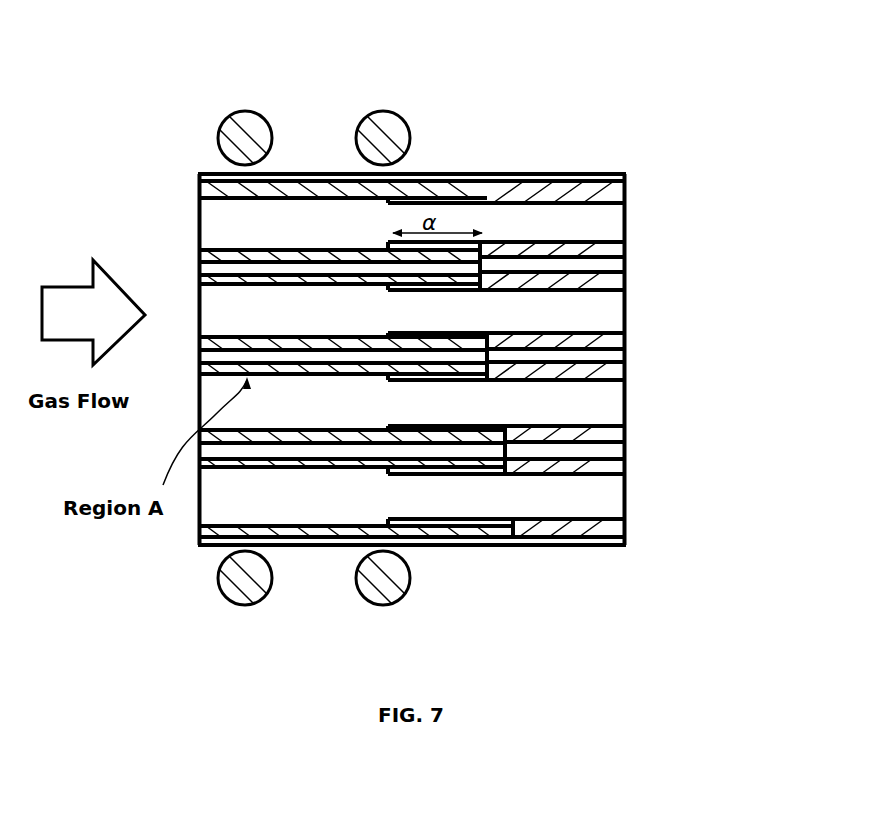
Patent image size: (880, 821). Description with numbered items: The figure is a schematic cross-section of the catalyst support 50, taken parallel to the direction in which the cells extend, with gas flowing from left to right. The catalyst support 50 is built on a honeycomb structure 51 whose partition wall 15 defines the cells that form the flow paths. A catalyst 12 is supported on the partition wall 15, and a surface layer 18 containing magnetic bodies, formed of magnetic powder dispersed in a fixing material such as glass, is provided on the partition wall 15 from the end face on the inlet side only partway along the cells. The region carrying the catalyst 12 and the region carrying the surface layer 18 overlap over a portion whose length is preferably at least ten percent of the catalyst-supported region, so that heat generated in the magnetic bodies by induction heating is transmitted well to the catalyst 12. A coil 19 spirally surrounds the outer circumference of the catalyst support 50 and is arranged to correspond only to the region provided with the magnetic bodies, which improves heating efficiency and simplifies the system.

The catalyst 12 is at (626, 433).
The partition wall 15 is at (626, 357).
The surface layer 18 is at (198, 257).
The coil 19 is at (245, 111).
The catalyst support 50 is at (455, 105).
The honeycomb structure 51 is at (628, 202).